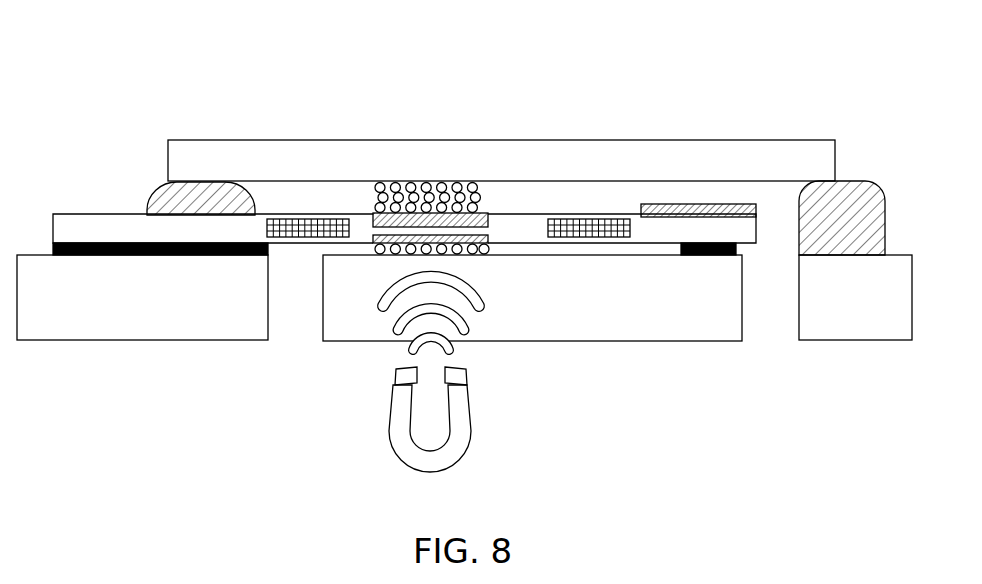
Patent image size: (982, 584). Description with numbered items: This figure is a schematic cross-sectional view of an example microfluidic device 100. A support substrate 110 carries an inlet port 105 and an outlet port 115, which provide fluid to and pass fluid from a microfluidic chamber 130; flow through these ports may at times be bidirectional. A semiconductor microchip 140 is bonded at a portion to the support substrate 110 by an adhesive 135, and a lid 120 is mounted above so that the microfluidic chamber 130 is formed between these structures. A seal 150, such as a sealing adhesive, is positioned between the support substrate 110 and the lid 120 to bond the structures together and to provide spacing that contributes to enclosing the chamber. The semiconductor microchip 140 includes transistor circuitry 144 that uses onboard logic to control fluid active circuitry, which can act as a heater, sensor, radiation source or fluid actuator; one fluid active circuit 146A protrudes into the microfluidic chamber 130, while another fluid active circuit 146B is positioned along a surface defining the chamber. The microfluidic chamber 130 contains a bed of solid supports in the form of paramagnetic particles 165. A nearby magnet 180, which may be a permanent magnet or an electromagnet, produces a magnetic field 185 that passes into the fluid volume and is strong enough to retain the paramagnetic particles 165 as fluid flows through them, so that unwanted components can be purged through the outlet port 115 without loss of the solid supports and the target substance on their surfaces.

The microfluidic device 100 is at (143, 67).
The inlet port 105 is at (293, 348).
The support substrate 110 is at (164, 310).
The outlet port 115 is at (770, 352).
The lid 120 is at (333, 158).
The microfluidic chamber 130 is at (332, 209).
The adhesive 135 is at (83, 243).
The semiconductor microchip 140 is at (133, 230).
The transistor circuitry 144 is at (337, 220).
The fluid active circuitry 146A is at (692, 210).
The fluid active circuitry 146B is at (393, 190).
The seal 150 is at (212, 192).
The paramagnetic particles 165 is at (483, 188).
The magnet 180 is at (460, 423).
The magnetic field 185 is at (482, 322).